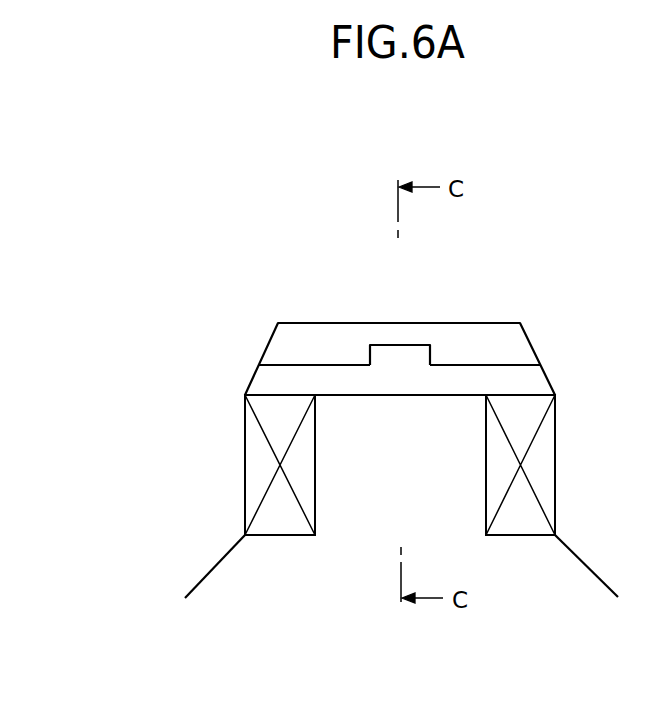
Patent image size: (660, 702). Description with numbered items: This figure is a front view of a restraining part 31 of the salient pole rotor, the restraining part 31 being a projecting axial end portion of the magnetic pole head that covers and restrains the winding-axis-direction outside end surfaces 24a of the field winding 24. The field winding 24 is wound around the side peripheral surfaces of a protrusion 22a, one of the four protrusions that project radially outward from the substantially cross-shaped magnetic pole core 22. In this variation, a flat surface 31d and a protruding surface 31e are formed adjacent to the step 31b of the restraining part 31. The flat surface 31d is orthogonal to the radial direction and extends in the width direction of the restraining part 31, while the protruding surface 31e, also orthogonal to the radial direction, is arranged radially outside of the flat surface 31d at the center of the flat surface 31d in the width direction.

The restraining part 31 is at (492, 323).
The step 31b is at (288, 340).
The flat surface 31d is at (348, 362).
The protruding surface 31e is at (403, 344).
The protrusion 22a is at (443, 428).
The winding-axis-direction outside end surface 24a is at (527, 393).
The field winding 24 is at (557, 468).
The magnetic pole core 22 is at (198, 575).